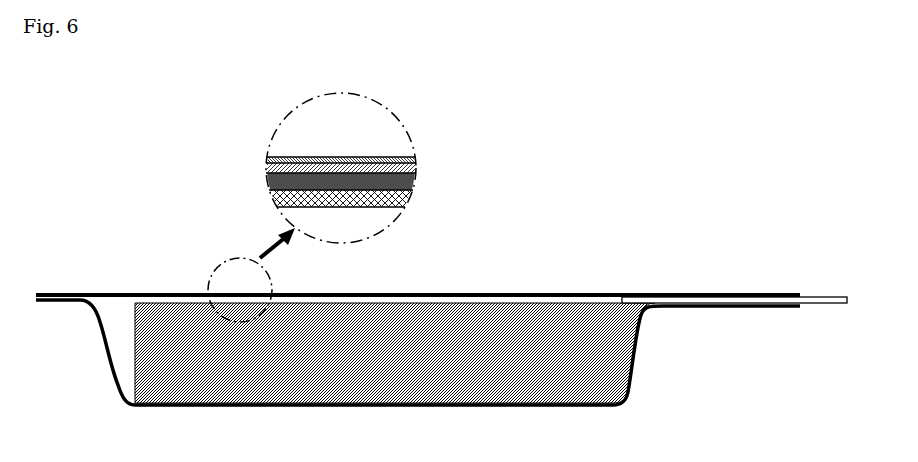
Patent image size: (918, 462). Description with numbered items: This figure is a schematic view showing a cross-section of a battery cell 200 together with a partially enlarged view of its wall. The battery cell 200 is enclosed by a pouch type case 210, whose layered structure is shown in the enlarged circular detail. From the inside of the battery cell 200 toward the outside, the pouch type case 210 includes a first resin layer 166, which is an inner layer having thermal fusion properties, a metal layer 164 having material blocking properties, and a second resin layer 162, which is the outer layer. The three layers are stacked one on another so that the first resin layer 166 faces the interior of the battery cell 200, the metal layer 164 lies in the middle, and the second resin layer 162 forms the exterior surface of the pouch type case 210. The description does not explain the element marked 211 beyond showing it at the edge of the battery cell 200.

The battery cell 200 is at (78, 103).
The pouch type case 210 is at (127, 293).
The film flap 211 is at (817, 297).
The second resin layer 162 is at (418, 163).
The metal layer 164 is at (418, 184).
The first resin layer 166 is at (412, 201).